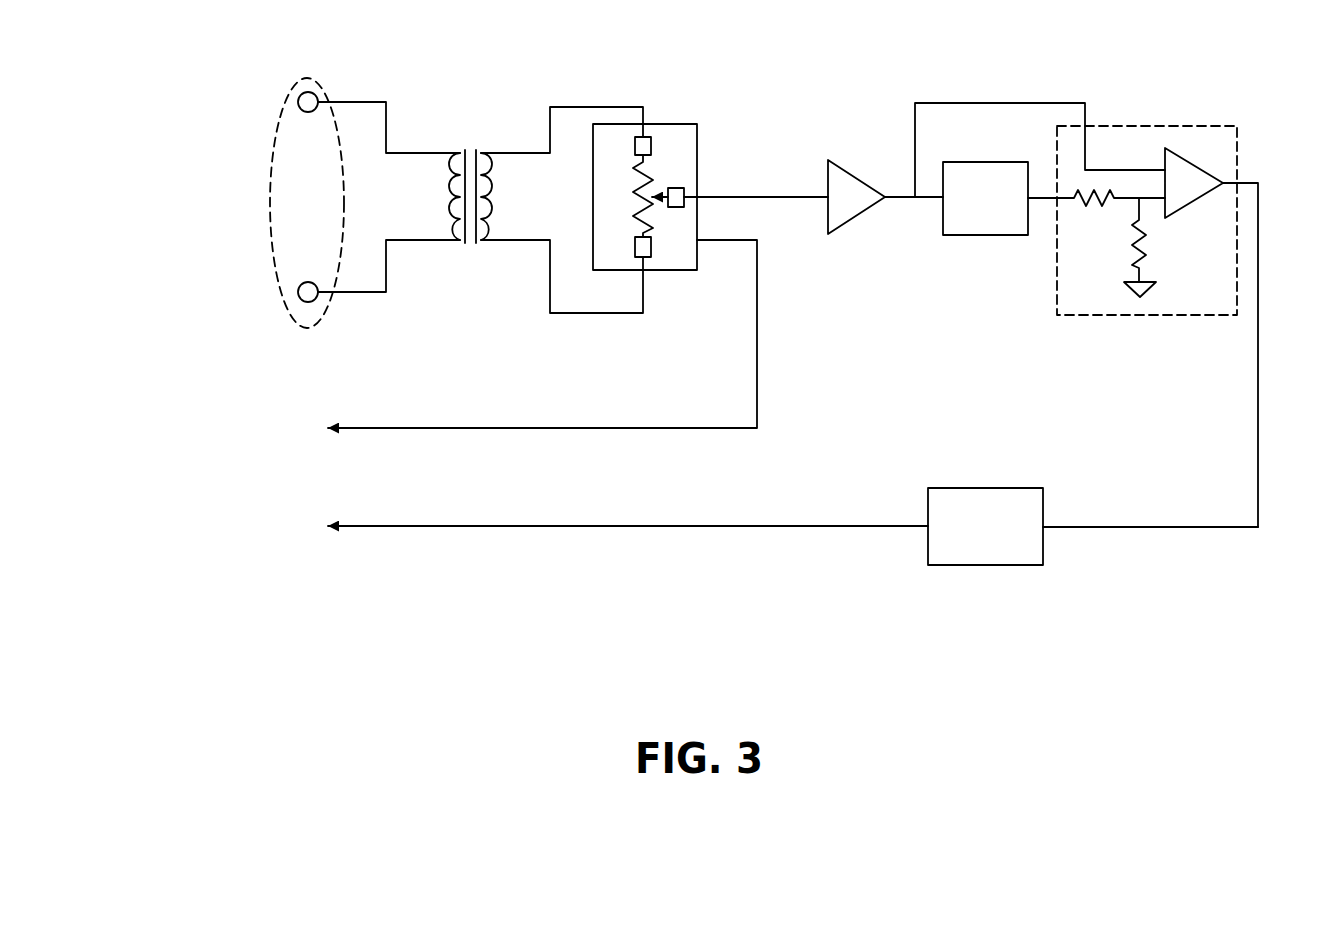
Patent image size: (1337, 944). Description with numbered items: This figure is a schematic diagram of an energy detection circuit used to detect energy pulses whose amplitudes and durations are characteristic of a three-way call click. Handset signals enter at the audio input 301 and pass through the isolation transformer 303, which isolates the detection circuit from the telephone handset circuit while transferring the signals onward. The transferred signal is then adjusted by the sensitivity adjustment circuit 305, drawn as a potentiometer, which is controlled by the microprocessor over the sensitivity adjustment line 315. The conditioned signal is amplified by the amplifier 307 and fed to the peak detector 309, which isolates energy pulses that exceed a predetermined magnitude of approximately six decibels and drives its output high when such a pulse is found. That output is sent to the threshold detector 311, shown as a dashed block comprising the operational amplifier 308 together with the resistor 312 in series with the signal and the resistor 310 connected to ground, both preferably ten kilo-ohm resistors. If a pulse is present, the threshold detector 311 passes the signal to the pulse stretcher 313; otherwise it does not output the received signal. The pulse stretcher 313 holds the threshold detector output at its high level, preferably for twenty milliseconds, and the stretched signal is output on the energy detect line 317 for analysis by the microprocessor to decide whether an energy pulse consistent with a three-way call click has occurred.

The audio input 301 is at (282, 104).
The isolation transformer 303 is at (485, 133).
The sensitivity adjustment circuit 305 is at (704, 169).
The amplifier 307 is at (859, 159).
The operational amplifier 308 is at (1176, 214).
The peak detector 309 is at (985, 241).
The resistor 310 is at (1152, 262).
The threshold detector 311 is at (1204, 121).
The resistor 312 is at (1075, 213).
The pulse stretcher 313 is at (965, 483).
The sensitivity adjustment line 315 is at (542, 423).
The energy detect line 317 is at (500, 535).